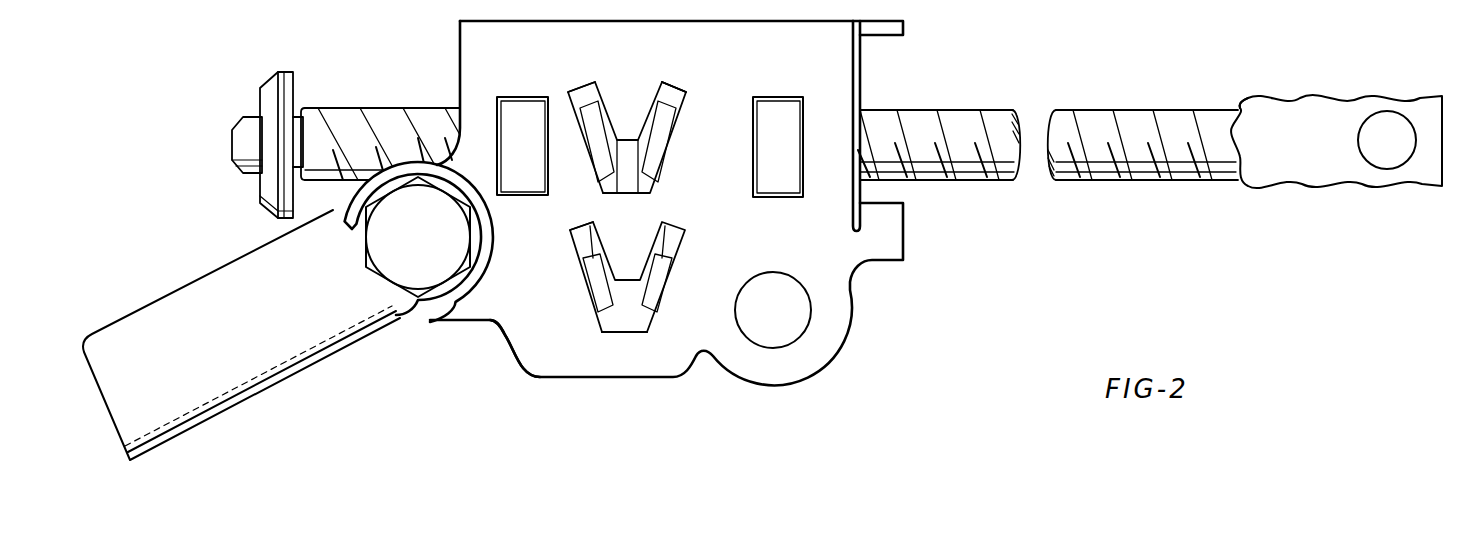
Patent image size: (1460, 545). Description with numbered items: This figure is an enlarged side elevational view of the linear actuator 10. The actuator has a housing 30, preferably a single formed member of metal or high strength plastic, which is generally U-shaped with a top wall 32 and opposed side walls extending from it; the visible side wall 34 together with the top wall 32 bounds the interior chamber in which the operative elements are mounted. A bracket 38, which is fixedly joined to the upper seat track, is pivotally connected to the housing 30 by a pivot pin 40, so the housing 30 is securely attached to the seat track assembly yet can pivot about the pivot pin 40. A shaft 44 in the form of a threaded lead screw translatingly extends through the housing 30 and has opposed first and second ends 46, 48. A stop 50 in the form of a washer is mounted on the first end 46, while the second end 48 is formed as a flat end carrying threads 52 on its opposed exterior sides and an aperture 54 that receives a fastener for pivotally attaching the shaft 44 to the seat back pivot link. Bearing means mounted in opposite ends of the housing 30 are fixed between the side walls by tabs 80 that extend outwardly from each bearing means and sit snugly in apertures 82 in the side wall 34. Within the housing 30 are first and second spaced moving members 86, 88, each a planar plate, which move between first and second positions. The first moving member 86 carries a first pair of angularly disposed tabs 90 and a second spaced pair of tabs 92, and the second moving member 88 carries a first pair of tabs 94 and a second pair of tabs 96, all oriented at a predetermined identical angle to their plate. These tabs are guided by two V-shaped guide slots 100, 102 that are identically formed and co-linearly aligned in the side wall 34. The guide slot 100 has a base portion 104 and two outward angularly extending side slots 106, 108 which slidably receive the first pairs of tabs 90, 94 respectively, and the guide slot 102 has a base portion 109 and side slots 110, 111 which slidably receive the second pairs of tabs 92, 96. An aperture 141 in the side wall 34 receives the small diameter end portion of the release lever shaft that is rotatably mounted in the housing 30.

The linear actuator 10 is at (484, 12).
The housing 30 is at (460, 35).
The top wall 32 is at (622, 22).
The side wall 34 is at (527, 343).
The bracket 38 is at (155, 303).
The pivot pin 40 is at (413, 272).
The shaft 44 is at (1067, 114).
The first end 46 is at (320, 117).
The second end 48 is at (1243, 100).
The stop 50 is at (283, 78).
The threads 52 is at (1358, 100).
The aperture 54 is at (1362, 150).
The tabs 80 is at (513, 137).
The apertures 82 is at (509, 110).
The first moving member 86 is at (680, 97).
The second moving member 88 is at (590, 92).
The first pair of tabs 90 is at (657, 148).
The second pair of tabs 92 is at (647, 293).
The first pair of tabs 94 is at (597, 133).
The second pair of tabs 96 is at (593, 293).
The guide slot 100 is at (624, 183).
The guide slot 102 is at (633, 322).
The base portion 104 is at (608, 185).
The side slot 106 is at (668, 98).
The side slot 108 is at (578, 90).
The base portion 109 is at (623, 332).
The side slot 110 is at (676, 248).
The side slot 111 is at (573, 248).
The aperture 141 is at (793, 335).